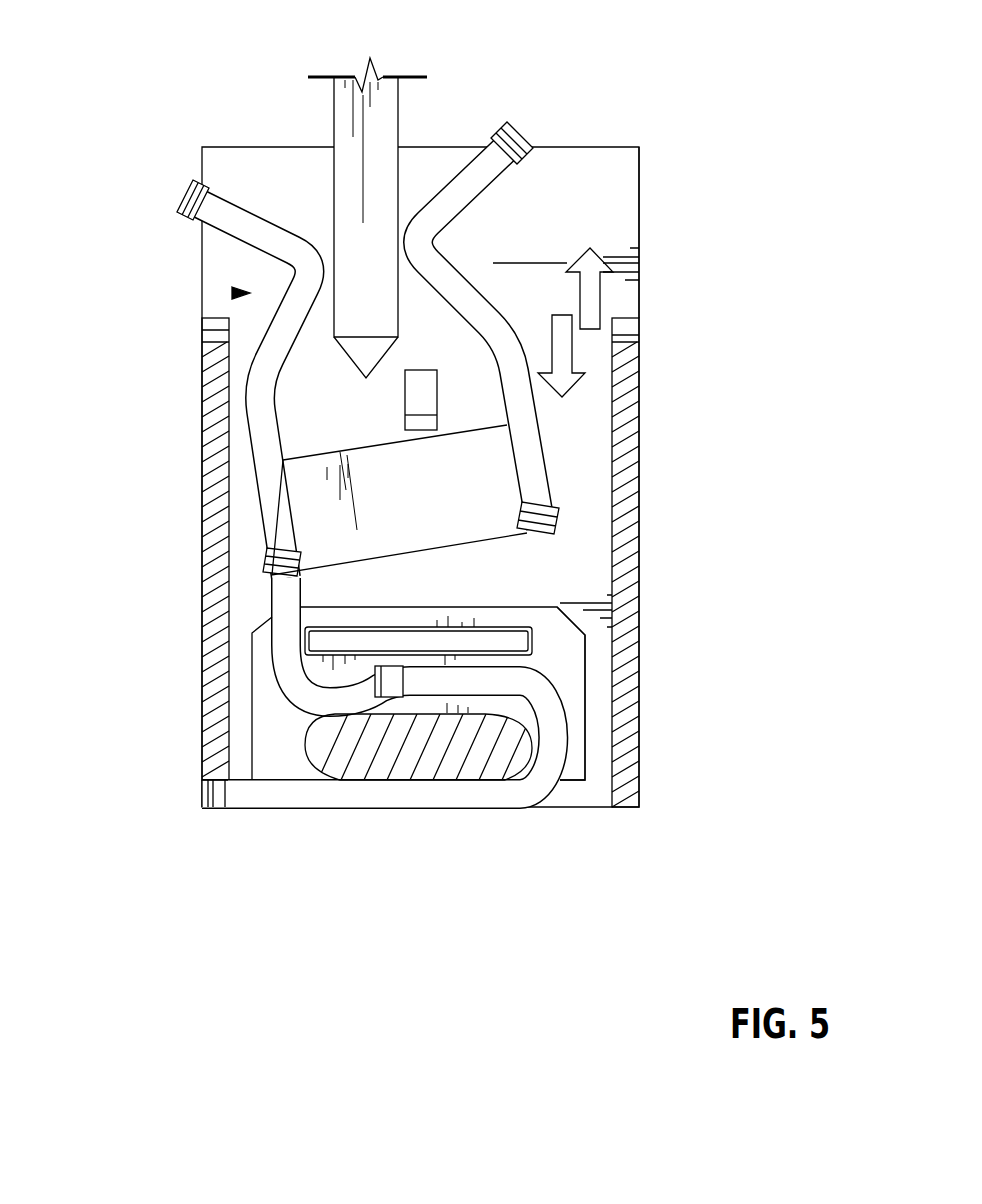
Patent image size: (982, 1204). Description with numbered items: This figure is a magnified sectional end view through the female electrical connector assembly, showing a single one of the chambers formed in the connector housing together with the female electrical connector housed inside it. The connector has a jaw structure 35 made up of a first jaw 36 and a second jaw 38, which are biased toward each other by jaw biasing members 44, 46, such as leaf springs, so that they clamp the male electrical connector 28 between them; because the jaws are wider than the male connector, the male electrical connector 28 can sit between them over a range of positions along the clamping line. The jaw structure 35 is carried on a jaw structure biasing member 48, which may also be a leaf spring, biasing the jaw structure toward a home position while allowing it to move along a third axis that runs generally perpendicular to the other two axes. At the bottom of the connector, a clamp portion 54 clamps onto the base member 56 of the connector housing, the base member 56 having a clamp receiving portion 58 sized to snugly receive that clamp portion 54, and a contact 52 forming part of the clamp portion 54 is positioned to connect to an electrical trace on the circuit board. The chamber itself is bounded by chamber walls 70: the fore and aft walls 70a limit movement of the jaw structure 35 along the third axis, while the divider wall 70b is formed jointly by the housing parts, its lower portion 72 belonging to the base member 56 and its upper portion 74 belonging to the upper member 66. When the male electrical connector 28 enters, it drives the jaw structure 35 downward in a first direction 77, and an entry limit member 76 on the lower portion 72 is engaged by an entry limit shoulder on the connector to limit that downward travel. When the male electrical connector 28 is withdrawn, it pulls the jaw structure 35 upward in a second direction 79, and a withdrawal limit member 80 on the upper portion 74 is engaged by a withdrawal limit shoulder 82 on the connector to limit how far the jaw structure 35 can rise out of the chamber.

The male electrical connector 28 is at (391, 128).
The jaw structure 35 is at (232, 293).
The first jaw 36 is at (581, 303).
The second jaw 38 is at (203, 379).
The jaw biasing member 44 is at (510, 333).
The jaw biasing member 46 is at (243, 384).
The jaw structure biasing member 48 is at (281, 671).
The contact 52 is at (249, 778).
The clamp portion 54 is at (565, 654).
The base member 56 is at (265, 690).
The clamp receiving portion 58 is at (486, 710).
The upper member 66 is at (601, 146).
The chamber wall 70 is at (640, 527).
The fore and aft wall 70a is at (203, 495).
The divider wall 70b is at (626, 172).
The lower portion 72 is at (588, 675).
The upper portion 74 is at (626, 202).
The entry limit member 76 is at (482, 627).
The first direction 77 is at (576, 366).
The second direction 79 is at (598, 302).
The withdrawal limit member 80 is at (424, 433).
The withdrawal limit shoulder 82 is at (472, 425).